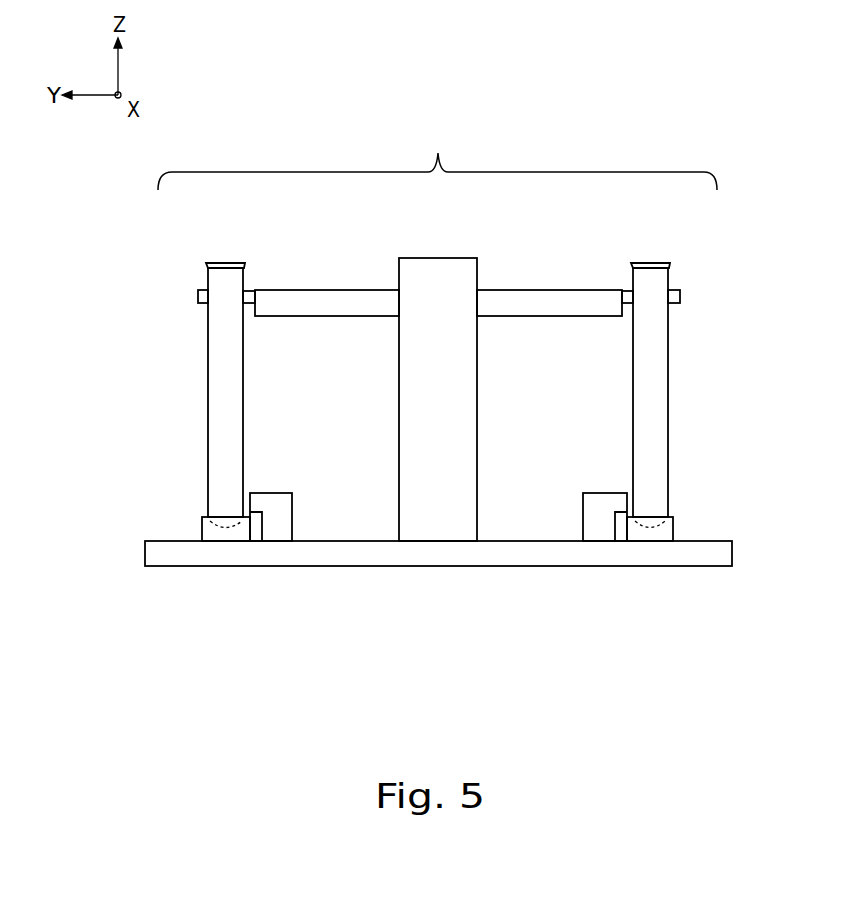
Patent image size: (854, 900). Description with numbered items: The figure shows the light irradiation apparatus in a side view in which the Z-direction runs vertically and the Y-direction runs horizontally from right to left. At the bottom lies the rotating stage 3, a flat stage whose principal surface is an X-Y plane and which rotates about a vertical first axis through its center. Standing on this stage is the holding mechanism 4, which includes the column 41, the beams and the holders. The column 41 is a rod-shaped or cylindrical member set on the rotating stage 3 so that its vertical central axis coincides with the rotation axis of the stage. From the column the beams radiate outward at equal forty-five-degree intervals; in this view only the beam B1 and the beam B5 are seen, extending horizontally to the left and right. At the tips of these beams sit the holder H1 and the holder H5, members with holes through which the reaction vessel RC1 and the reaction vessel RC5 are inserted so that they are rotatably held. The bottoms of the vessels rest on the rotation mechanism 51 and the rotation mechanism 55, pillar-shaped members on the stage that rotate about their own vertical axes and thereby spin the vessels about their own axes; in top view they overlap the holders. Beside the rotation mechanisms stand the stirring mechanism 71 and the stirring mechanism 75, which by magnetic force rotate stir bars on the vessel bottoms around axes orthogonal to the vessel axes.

The rotating stage 3 is at (145, 553).
The holding mechanism 4 is at (437, 156).
The column 41 is at (418, 258).
The beam B1 is at (310, 290).
The beam B5 is at (565, 290).
The reaction vessel RC1 is at (208, 388).
The reaction vessel RC5 is at (668, 388).
The holder H1 is at (199, 291).
The holder H5 is at (679, 291).
The rotation mechanism 51 is at (203, 518).
The rotation mechanism 55 is at (672, 518).
The stirring mechanism 71 is at (278, 493).
The stirring mechanism 75 is at (600, 493).